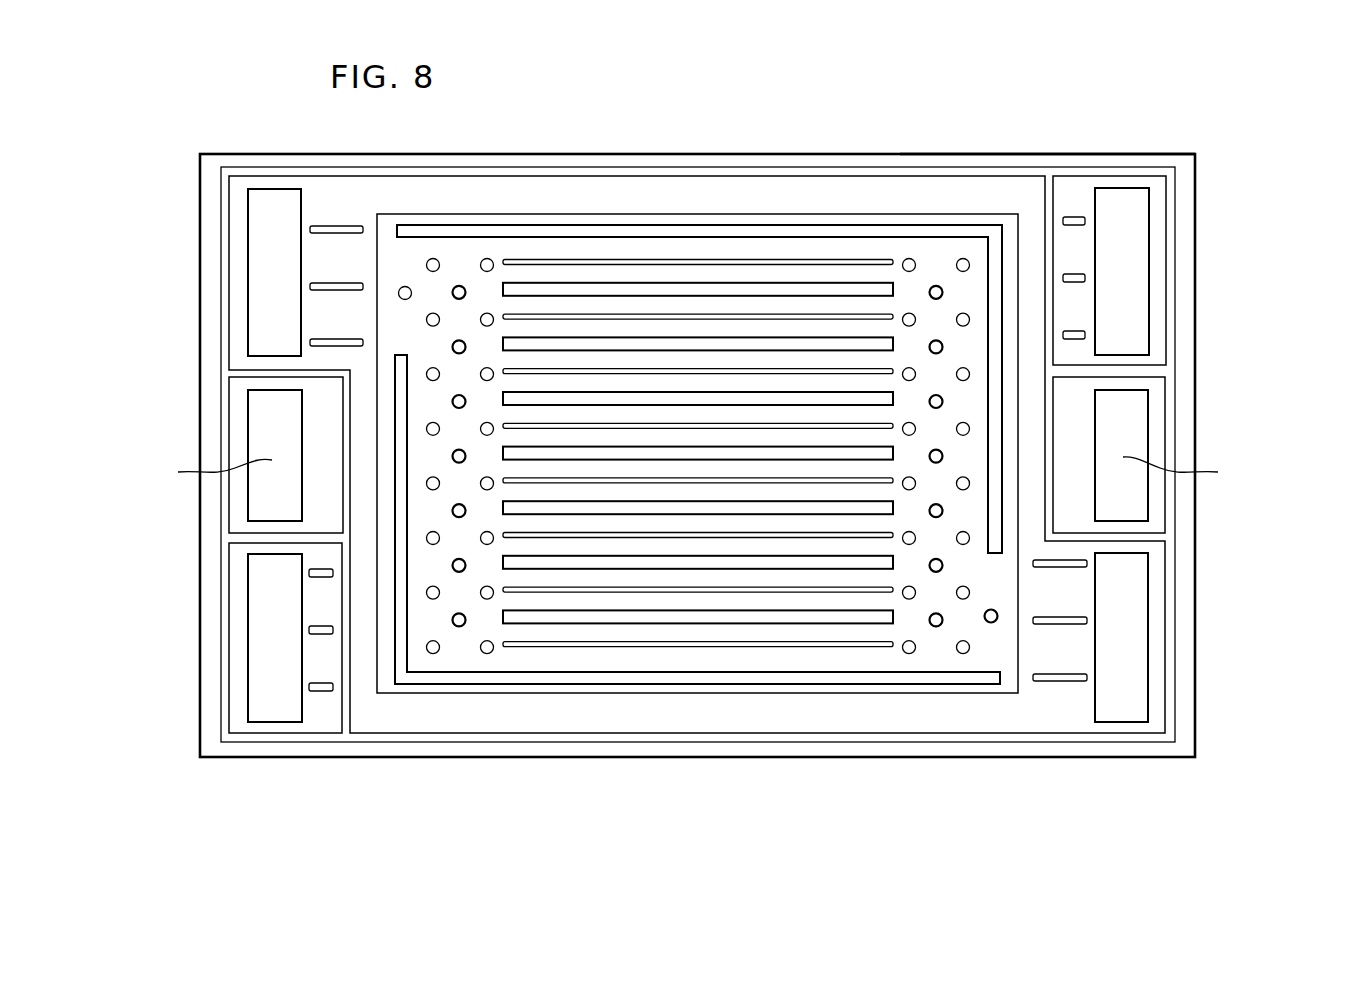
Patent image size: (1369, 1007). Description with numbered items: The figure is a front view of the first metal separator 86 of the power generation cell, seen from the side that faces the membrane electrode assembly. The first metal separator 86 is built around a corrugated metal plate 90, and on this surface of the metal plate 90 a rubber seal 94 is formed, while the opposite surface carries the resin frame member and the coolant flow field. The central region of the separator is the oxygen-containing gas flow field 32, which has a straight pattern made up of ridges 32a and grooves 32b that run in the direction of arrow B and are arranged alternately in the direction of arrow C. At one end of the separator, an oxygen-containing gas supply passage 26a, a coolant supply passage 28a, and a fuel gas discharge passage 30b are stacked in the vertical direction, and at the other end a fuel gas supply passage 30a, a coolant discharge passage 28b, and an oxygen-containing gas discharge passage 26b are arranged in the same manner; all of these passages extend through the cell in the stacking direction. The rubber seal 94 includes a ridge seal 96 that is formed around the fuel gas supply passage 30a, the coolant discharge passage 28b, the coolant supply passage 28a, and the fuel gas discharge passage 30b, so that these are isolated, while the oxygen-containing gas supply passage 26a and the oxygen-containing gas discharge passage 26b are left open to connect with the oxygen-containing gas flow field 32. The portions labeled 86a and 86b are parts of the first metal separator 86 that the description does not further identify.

The first metal separator 86 is at (990, 97).
The first separator plate 86a is at (1062, 747).
The second separator plate 86b is at (990, 745).
The rubber seal 94 is at (1087, 152).
The ridge seal 96 is at (578, 170).
The oxygen-containing gas supply passage 26a is at (305, 272).
The oxygen-containing gas discharge passage 26b is at (1090, 637).
The coolant supply passage 28a is at (275, 455).
The coolant discharge passage 28b is at (1121, 455).
The fuel gas supply passage 30a is at (1106, 271).
The fuel gas discharge passage 30b is at (290, 638).
The oxygen-containing gas flow field 32 is at (790, 285).
The ridges 32a is at (584, 287).
The grooves 32b is at (705, 317).
The corrugated metal plate 90 is at (839, 662).